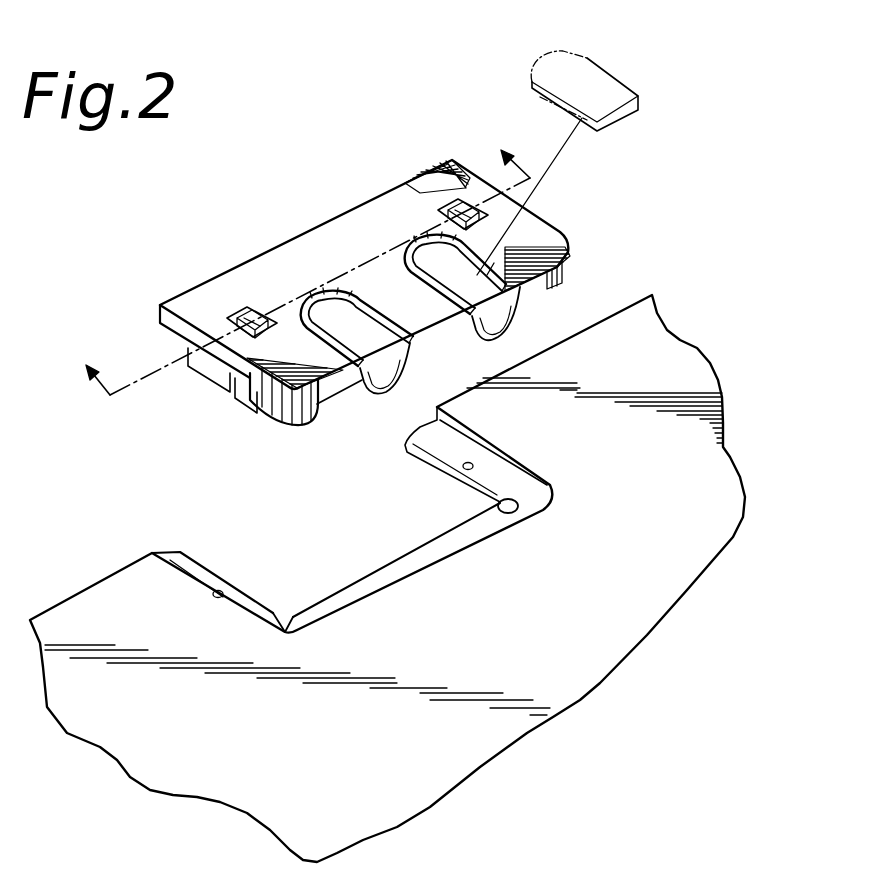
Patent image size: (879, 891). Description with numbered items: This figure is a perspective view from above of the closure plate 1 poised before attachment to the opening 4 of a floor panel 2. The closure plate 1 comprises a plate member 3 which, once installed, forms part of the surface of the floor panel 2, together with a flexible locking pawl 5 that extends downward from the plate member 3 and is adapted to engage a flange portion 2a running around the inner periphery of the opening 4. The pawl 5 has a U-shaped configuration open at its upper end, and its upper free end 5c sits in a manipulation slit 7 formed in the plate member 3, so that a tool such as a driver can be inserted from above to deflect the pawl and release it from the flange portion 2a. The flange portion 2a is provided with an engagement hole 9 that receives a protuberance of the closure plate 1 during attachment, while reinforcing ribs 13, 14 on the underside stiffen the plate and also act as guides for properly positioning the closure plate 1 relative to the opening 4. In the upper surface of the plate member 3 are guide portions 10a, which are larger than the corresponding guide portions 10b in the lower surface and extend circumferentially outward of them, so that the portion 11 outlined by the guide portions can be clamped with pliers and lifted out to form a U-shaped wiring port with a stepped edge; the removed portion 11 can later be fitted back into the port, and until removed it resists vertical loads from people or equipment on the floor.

The closure plate 1 is at (369, 194).
The floor panel 2 is at (710, 470).
The flange portion 2a is at (265, 617).
The plate member 3 is at (283, 263).
The opening 4 is at (362, 547).
The locking pawl 5 is at (240, 390).
The upper free end 5c is at (167, 332).
The manipulation slit 7 is at (238, 310).
The engagement hole 9 is at (463, 471).
The guide portion 10a is at (363, 293).
The guide portion 10b is at (440, 354).
The portion outlined by the guide portion 11 is at (600, 82).
The reinforcing rib 13 is at (212, 362).
The reinforcing rib 14 is at (290, 418).